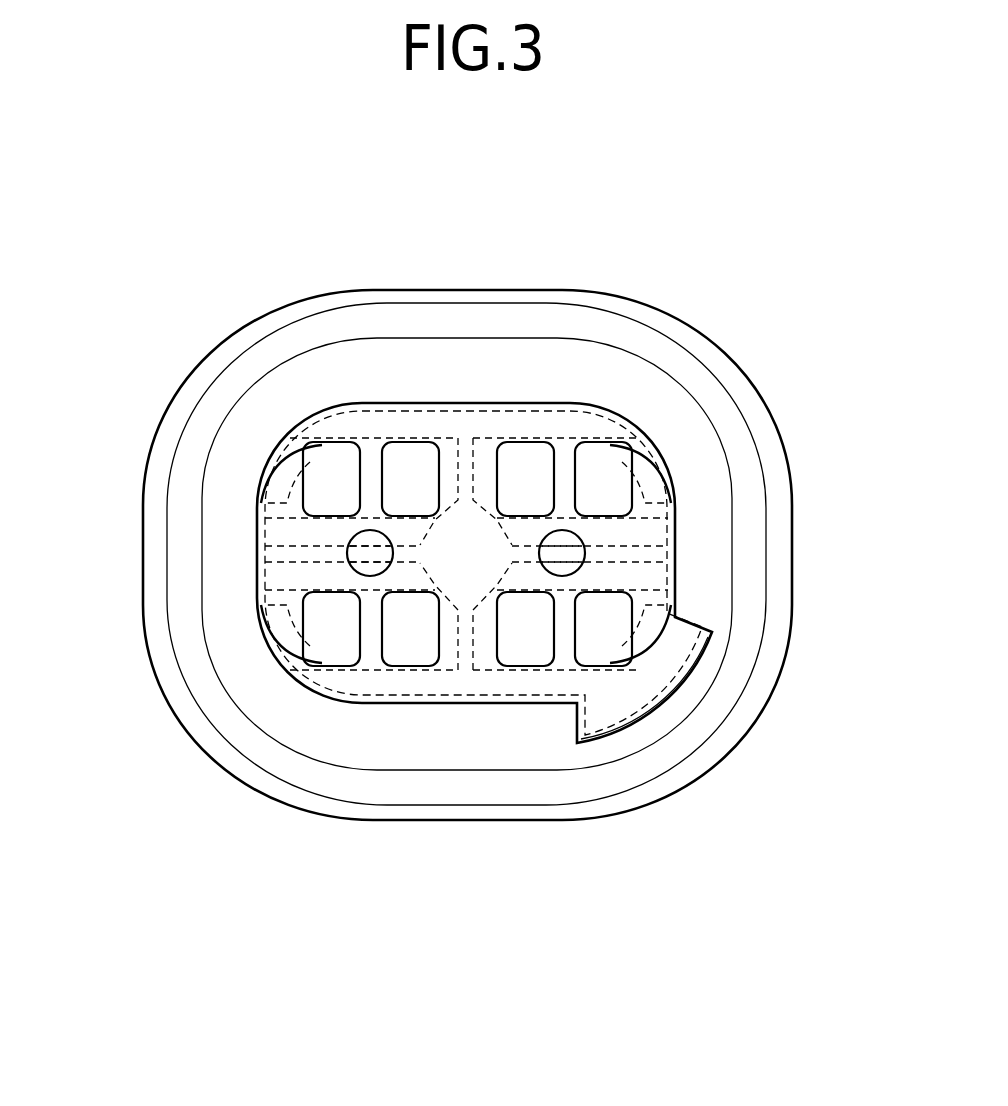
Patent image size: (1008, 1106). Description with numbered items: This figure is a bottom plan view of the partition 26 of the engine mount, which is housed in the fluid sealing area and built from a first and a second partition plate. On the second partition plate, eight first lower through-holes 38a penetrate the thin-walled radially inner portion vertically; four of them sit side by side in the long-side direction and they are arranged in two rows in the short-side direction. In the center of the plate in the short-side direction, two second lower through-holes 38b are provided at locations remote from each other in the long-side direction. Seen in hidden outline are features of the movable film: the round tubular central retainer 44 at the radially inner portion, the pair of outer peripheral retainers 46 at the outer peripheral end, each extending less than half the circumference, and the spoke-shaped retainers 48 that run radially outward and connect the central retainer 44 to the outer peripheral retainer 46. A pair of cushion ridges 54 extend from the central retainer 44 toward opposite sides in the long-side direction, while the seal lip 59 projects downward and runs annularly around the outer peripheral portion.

The partition 26 is at (768, 296).
The first lower through-holes 38a is at (360, 483).
The second lower through-holes 38b is at (363, 533).
The central retainer 44 is at (497, 532).
The outer peripheral retainer 46 is at (284, 464).
The spoke-shaped retainer 48 is at (467, 472).
The cushion ridge 54 is at (347, 546).
The seal lip 59 is at (383, 552).